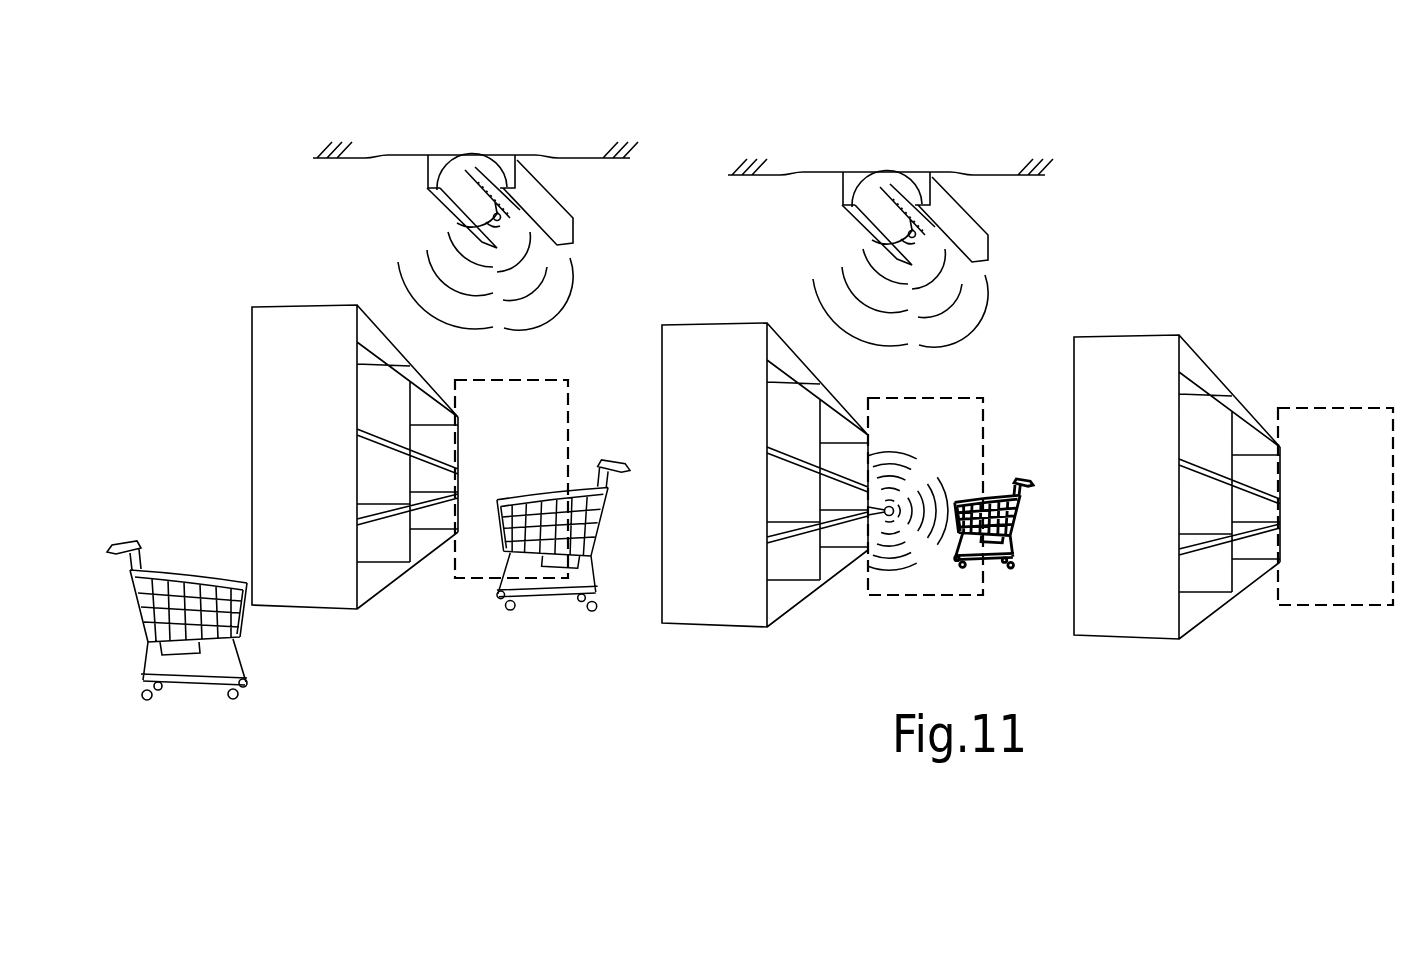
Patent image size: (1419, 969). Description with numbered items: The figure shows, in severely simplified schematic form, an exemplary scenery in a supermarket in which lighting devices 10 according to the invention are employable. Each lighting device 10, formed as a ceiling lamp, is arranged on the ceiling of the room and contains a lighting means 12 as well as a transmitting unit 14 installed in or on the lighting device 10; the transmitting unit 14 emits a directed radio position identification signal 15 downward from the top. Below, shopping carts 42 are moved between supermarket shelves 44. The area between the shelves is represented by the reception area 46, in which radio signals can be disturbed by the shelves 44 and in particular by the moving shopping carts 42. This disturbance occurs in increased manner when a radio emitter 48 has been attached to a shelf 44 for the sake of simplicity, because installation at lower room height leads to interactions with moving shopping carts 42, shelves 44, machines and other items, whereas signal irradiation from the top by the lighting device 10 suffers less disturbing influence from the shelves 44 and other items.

The lighting device 10 is at (668, 160).
The lighting means 12 is at (480, 185).
The transmitting unit 14 is at (453, 204).
The position identification signal 15 is at (543, 286).
The shopping cart 42 is at (218, 580).
The supermarket shelf 44 is at (263, 393).
The reception area 46 is at (512, 434).
The radio emitter 48 is at (852, 512).